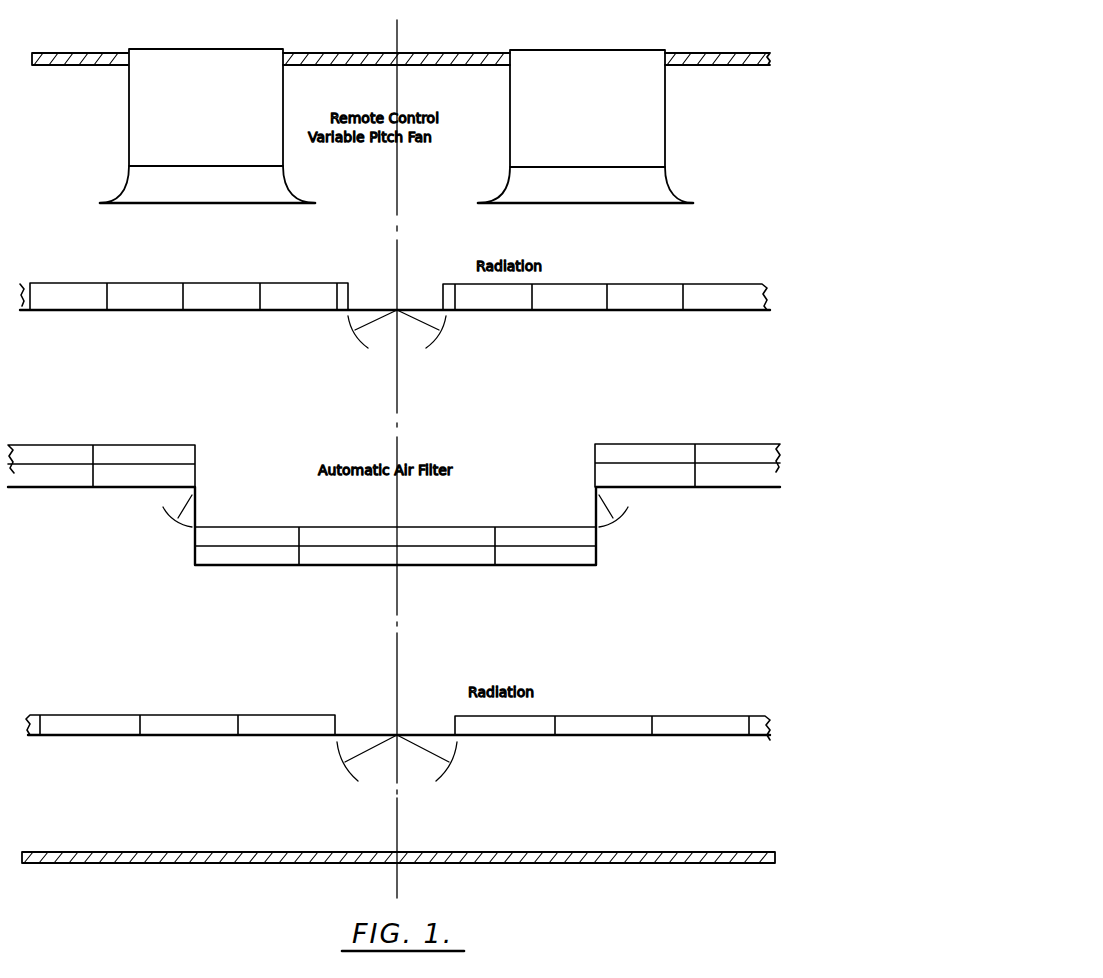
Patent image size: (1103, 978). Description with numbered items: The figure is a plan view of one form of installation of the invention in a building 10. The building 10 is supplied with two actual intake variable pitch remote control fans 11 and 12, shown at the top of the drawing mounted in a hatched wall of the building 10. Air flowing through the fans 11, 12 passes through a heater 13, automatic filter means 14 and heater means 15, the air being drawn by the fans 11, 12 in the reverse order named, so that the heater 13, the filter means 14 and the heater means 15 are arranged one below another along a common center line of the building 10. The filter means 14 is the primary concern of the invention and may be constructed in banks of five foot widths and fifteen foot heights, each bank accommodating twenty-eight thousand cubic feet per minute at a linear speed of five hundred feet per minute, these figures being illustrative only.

The building 10 is at (467, 52).
The variable pitch remote control fan 11 is at (184, 203).
The variable pitch remote control fan 12 is at (645, 194).
The heater 13 is at (283, 301).
The automatic filter means 14 is at (330, 557).
The heater means 15 is at (260, 727).